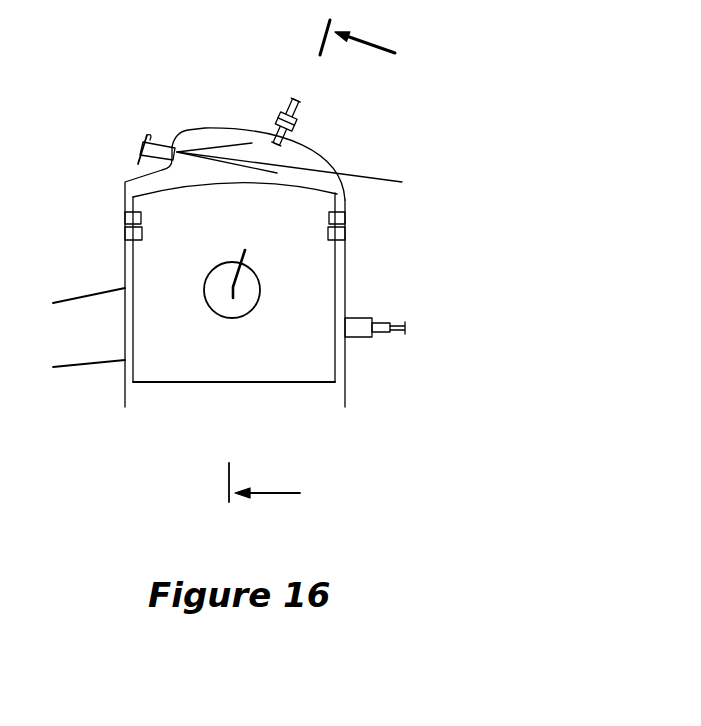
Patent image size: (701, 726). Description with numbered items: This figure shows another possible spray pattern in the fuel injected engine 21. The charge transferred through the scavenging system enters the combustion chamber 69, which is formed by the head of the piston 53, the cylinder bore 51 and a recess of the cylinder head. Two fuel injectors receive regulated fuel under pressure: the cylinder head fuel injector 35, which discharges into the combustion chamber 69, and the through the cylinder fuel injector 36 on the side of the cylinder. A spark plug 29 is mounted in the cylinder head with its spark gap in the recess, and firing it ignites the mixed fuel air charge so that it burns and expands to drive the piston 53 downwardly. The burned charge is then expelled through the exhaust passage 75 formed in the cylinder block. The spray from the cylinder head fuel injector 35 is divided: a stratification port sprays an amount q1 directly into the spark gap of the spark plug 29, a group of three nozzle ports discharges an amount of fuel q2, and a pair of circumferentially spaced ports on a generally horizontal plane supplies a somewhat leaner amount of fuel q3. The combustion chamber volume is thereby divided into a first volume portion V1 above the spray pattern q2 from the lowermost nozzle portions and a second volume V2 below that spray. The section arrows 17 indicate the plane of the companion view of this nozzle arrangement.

The section line 17- 17 is at (278, 255).
The engine 21 is at (455, 63).
The spark plug 29 is at (303, 110).
The cylinder head fuel injector 35 is at (165, 143).
The through the cylinder fuel injector 36 is at (357, 323).
The cylinder bore 51 is at (342, 393).
The piston 53 is at (332, 277).
The combustion chamber 69 is at (210, 137).
The exhaust passage 75 is at (83, 353).
The stratification nozzle spray q1 is at (235, 147).
The spray pattern from lowermost injection nozzle portions q2 is at (380, 173).
The leaner fuel amount q3 is at (247, 173).
The first volume portion V1 is at (310, 157).
The second volume V2 is at (308, 176).